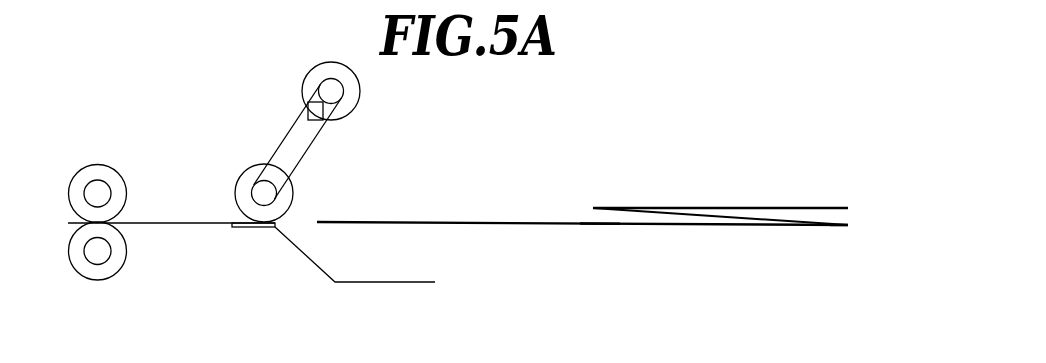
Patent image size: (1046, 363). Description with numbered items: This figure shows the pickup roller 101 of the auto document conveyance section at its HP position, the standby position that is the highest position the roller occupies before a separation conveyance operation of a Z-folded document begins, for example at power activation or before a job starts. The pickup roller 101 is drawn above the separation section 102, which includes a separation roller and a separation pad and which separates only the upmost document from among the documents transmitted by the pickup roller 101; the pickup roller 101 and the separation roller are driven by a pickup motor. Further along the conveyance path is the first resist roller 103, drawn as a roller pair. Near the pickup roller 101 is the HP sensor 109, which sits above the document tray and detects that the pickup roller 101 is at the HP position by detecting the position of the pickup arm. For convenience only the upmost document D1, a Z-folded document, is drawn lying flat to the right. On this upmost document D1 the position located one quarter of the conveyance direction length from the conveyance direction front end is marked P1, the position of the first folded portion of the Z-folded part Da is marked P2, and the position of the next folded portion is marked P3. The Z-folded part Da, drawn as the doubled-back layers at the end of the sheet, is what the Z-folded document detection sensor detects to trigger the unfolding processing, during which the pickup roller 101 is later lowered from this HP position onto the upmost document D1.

The pickup roller 101 is at (360, 95).
The separation section 102 is at (240, 177).
The first resist roller 103 is at (99, 165).
The HP sensor 109 is at (308, 113).
The upmost document D1 is at (465, 223).
The position located one-quarter of the conveyance direction length from the front e P1 is at (595, 225).
The position of the first folded portion P2 is at (848, 226).
The position of the second folded portion P3 is at (595, 205).
The Z-folded part Da is at (719, 181).